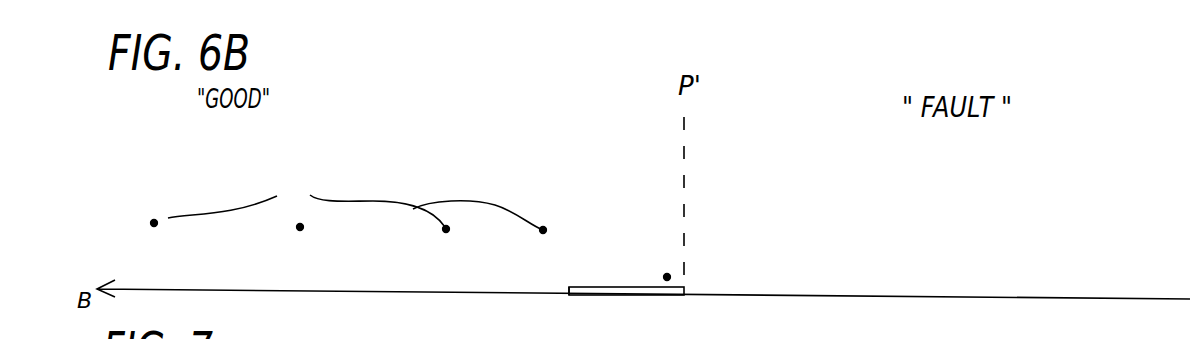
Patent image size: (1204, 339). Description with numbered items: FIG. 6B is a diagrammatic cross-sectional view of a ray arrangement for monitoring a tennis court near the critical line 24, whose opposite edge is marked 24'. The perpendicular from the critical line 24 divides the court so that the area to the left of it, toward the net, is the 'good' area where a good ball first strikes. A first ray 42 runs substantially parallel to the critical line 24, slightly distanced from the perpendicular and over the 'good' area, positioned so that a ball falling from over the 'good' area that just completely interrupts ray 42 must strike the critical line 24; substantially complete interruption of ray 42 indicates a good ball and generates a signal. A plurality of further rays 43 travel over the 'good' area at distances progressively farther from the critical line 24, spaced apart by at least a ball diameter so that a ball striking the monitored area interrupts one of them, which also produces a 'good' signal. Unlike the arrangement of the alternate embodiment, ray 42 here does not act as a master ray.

The further rays 43 is at (300, 223).
The first ray 42 is at (662, 273).
The critical line 24 is at (632, 313).
The leading edge of scan window 24' is at (572, 313).